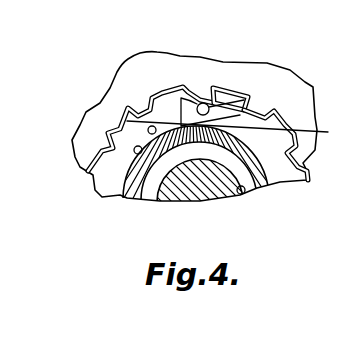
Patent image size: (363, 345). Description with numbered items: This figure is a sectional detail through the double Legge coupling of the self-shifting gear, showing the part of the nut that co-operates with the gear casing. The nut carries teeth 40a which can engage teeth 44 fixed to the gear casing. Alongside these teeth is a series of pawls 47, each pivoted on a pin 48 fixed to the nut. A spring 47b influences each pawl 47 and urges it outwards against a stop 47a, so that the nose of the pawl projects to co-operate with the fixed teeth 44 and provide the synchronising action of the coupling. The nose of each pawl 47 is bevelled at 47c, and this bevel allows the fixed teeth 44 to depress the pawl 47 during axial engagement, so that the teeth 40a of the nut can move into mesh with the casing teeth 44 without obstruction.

The teeth 40a is at (160, 92).
The springs 47b is at (113, 128).
The bevelled nose 47c is at (242, 100).
The teeth 44 is at (265, 110).
The pawls 47 is at (213, 97).
The pins 48 is at (178, 85).
The stops 47a is at (243, 131).